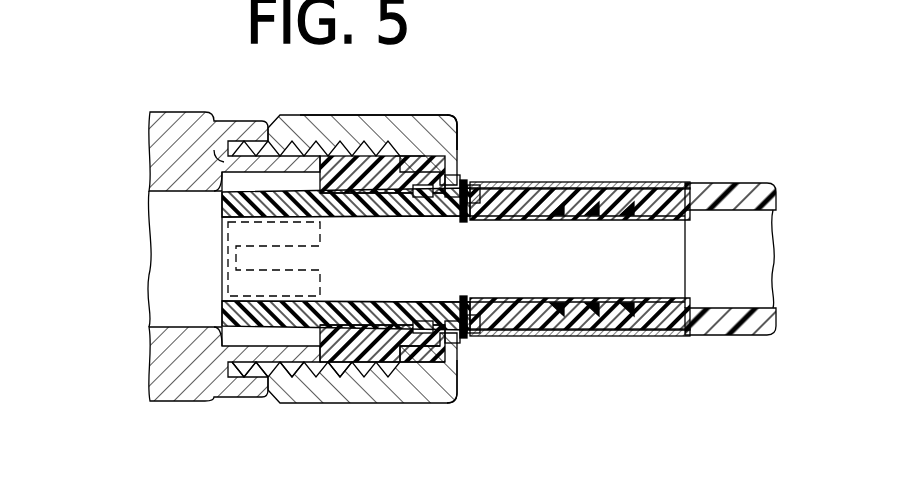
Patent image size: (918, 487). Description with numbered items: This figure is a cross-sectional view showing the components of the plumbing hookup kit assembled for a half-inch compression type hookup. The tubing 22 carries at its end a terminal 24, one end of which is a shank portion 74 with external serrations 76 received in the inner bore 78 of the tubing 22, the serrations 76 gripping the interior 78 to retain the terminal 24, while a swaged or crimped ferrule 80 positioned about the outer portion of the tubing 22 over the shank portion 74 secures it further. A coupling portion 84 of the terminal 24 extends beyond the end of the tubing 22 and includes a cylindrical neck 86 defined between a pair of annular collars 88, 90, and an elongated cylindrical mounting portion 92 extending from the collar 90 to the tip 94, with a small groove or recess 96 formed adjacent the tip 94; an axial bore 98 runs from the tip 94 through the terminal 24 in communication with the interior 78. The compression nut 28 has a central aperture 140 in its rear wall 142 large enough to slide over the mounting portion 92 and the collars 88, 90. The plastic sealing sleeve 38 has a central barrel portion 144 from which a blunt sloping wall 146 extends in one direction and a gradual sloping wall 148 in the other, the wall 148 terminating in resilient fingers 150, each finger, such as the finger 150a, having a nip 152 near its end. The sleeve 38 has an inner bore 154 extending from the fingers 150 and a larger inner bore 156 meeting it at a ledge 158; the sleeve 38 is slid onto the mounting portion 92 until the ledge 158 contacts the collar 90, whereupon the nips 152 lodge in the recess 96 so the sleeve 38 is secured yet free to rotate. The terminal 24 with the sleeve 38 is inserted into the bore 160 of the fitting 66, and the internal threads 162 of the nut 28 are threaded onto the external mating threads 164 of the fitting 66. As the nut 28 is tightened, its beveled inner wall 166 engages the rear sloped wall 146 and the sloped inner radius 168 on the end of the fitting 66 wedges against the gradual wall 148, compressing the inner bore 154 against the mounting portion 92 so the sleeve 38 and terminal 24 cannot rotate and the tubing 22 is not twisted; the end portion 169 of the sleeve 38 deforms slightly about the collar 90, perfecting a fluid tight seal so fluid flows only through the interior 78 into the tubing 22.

The tubing 22 is at (730, 193).
The terminal 24 is at (507, 141).
The compression nut 28 is at (268, 124).
The plastic sealing sleeve 38 is at (303, 115).
The fitting 66 is at (222, 150).
The shank portion 74 is at (678, 211).
The external serrations 76 is at (600, 183).
The inner bore 78 is at (774, 222).
The swaged or crimped ferrule 80 is at (643, 188).
The coupling portion 84 is at (496, 128).
The cylindrical recess or neck 86 is at (465, 338).
The annular collar 88 is at (473, 333).
The annular collar 90 is at (423, 383).
The elongated cylindrical mounting portion 92 is at (387, 384).
The tip 94 is at (222, 205).
The cylindrical groove or recess 96 is at (222, 222).
The axial passageway or bore 98 is at (660, 243).
The central aperture 140 is at (470, 178).
The rear wall 142 is at (454, 175).
The central cylindrical barrel portion 144 is at (353, 170).
The inwardly tapered or sloping wall 146 is at (428, 184).
The inwardly tapered or sloping wall 148 is at (334, 170).
The resilient fingers 150 is at (207, 256).
The resilient finger 150a is at (222, 168).
The nip 152 is at (226, 190).
The inner bore 154 is at (345, 386).
The larger inner bore 156 is at (417, 375).
The ledge 158 is at (407, 157).
The bore 160 is at (228, 325).
The internal threads 162 is at (300, 392).
The external mating threads 164 is at (270, 378).
The beveled or sloped inner wall 166 is at (458, 398).
The sloped inner radius 168 is at (340, 393).
The end portion 169 is at (480, 186).